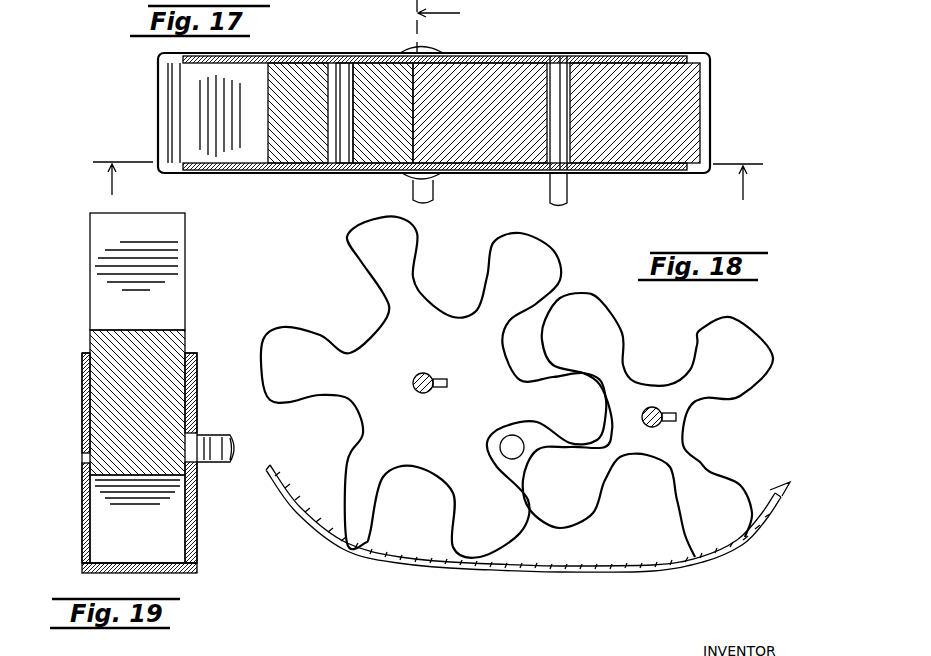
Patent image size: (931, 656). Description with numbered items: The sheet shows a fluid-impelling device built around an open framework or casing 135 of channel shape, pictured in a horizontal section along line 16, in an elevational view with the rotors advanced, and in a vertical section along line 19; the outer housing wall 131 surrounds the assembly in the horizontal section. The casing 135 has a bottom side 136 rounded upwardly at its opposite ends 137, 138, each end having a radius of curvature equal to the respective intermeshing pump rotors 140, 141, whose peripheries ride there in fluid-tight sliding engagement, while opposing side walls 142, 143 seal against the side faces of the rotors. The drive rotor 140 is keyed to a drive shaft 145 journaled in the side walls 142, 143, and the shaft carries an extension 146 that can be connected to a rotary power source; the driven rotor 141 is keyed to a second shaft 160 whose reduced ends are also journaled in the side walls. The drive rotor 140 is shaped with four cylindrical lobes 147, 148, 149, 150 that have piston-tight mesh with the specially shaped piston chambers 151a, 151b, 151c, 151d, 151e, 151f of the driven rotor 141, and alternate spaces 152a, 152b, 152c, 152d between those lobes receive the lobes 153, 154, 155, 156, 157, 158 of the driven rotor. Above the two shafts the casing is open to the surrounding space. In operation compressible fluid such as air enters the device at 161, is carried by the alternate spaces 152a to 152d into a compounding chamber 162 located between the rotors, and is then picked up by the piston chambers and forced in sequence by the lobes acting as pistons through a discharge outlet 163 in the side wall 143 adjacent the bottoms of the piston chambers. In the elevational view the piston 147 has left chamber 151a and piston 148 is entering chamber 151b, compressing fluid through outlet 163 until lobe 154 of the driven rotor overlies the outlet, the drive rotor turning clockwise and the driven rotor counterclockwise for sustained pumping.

In FIG. 17, the casing 131 is at (710, 122).
In FIG. 17, the framework or casing 135 is at (372, 6).
In FIG. 19, the framework or casing 135 is at (206, 532).
In FIG. 18, the framework or casing 135 is at (499, 580).
In FIG. 17, the bottom side 136 is at (528, 4).
In FIG. 19, the bottom side 136 is at (120, 575).
In FIG. 18, the bottom side 136 is at (565, 578).
In FIG. 18, the end 137 is at (770, 530).
In FIG. 17, the end 138 is at (160, 103).
In FIG. 18, the end 138 is at (300, 500).
In FIG. 17, the drive rotor 140 is at (631, 93).
In FIG. 18, the drive rotor 140 is at (778, 328).
In FIG. 17, the driven rotor 141 is at (300, 75).
In FIG. 18, the driven rotor 141 is at (255, 331).
In FIG. 17, the side wall 142 is at (603, 170).
In FIG. 19, the side wall 142 is at (82, 403).
In FIG. 17, the side wall 143 is at (482, 55).
In FIG. 19, the side wall 143 is at (81, 314).
In FIG. 18, the side wall 143 is at (290, 440).
In FIG. 17, the drive shaft 145 is at (584, 55).
In FIG. 18, the drive shaft 145 is at (648, 427).
In FIG. 17, the extension 146 is at (548, 193).
In FIG. 18, the cylindrical lobe 147 is at (590, 340).
In FIG. 18, the cylindrical lobe 148 is at (570, 497).
In FIG. 18, the cylindrical lobe 149 is at (720, 520).
In FIG. 18, the cylindrical lobe 150 is at (745, 368).
In FIG. 18, the piston chamber 151a is at (520, 352).
In FIG. 18, the piston chamber 151b is at (498, 428).
In FIG. 18, the piston chamber 151c is at (438, 525).
In FIG. 18, the piston chamber 151d is at (350, 443).
In FIG. 18, the piston chamber 151e is at (353, 323).
In FIG. 18, the piston chamber 151f is at (462, 278).
In FIG. 18, the alternate space 152a is at (632, 368).
In FIG. 18, the alternate space 152b is at (614, 472).
In FIG. 18, the alternate space 152c is at (688, 425).
In FIG. 18, the alternate space 152d is at (625, 335).
In FIG. 18, the lobe 153 is at (585, 418).
In FIG. 19, the lobe 154 is at (110, 532).
In FIG. 18, the lobe 154 is at (485, 578).
In FIG. 18, the lobe 155 is at (347, 543).
In FIG. 18, the lobe 156 is at (262, 368).
In FIG. 19, the lobe 157 is at (197, 222).
In FIG. 18, the lobe 157 is at (357, 243).
In FIG. 18, the lobe 158 is at (500, 243).
In FIG. 18, the shaft 160 is at (414, 378).
In FIG. 18, the fluid entry 161 is at (788, 396).
In FIG. 18, the compounding chamber 162 is at (630, 540).
In FIG. 17, the discharge outlet 163 is at (422, 45).
In FIG. 19, the discharge outlet 163 is at (217, 455).
In FIG. 18, the discharge outlet 163 is at (500, 447).
In FIG. 17, the section line 16 is at (427, 185).
In FIG. 17, the section line 19 is at (450, 26).